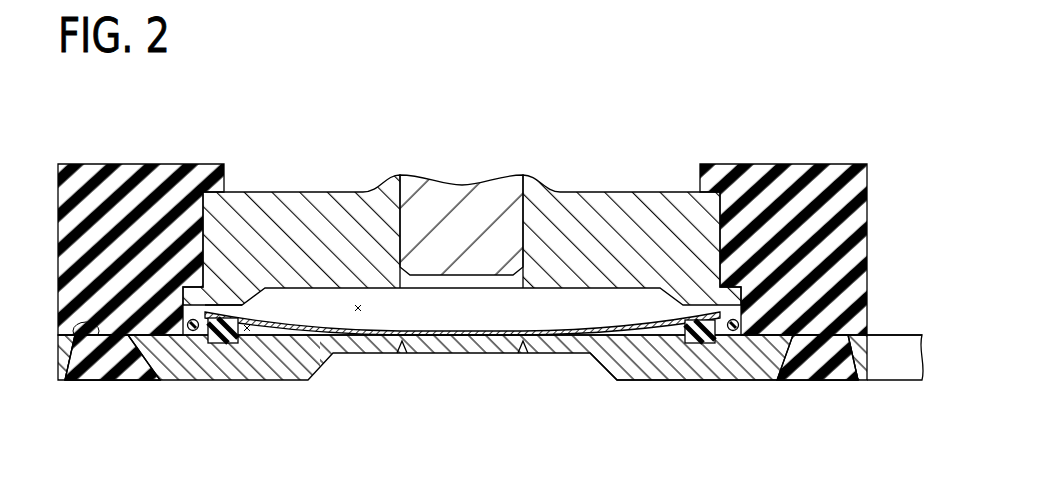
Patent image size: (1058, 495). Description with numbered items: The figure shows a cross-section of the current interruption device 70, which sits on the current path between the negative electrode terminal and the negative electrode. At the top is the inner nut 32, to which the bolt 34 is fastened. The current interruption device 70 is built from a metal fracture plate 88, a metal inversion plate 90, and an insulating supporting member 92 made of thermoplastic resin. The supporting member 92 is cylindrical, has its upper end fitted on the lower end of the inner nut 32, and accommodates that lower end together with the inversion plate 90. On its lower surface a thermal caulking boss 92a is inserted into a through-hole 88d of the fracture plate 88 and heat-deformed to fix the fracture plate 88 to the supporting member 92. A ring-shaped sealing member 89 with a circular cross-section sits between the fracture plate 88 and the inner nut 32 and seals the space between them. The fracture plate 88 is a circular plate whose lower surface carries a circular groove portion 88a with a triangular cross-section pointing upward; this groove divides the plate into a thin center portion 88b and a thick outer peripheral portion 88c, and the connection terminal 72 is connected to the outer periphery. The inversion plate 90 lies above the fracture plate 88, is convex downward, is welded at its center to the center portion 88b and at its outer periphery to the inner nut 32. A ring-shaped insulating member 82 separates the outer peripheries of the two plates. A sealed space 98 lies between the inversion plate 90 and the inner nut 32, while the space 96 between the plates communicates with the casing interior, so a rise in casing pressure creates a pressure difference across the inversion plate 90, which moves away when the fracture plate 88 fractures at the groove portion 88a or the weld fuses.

The current interruption device 70 is at (845, 128).
The inner nut 32 is at (655, 200).
The bolt 34 is at (488, 207).
The connection terminal 72 is at (884, 372).
The insulating member 82 is at (226, 344).
The fracture plate 88 is at (870, 334).
The groove portion 88a is at (523, 354).
The center portion 88b is at (497, 354).
The outer peripheral portion 88c is at (667, 366).
The through-hole 88d is at (70, 341).
The sealing member 89 is at (192, 333).
The inversion plate 90 is at (302, 329).
The supporting member 92 is at (855, 180).
The thermal caulking boss 92a is at (135, 373).
The space 96 is at (240, 311).
The space 98 is at (358, 304).